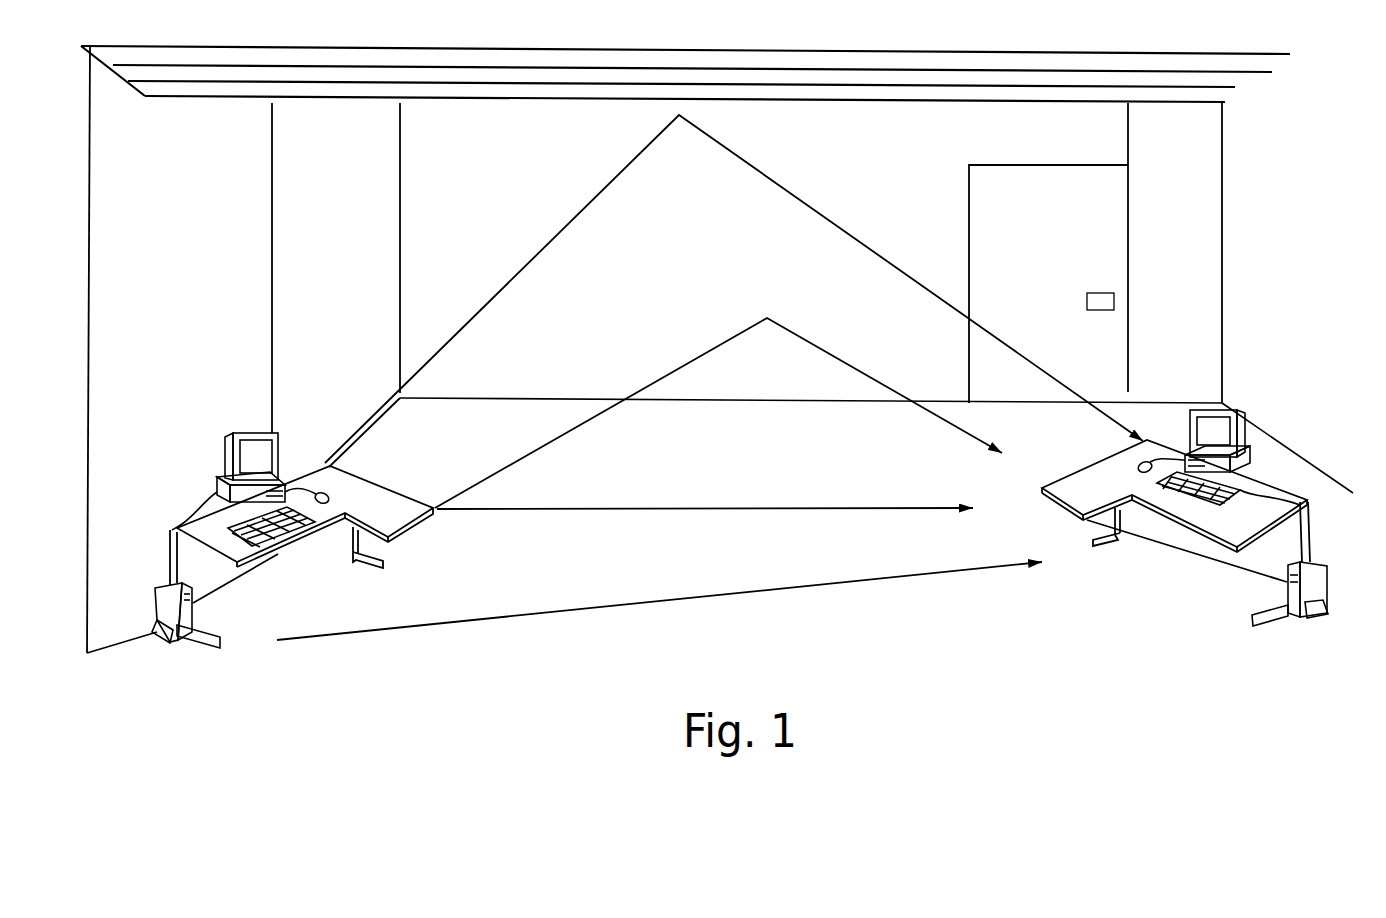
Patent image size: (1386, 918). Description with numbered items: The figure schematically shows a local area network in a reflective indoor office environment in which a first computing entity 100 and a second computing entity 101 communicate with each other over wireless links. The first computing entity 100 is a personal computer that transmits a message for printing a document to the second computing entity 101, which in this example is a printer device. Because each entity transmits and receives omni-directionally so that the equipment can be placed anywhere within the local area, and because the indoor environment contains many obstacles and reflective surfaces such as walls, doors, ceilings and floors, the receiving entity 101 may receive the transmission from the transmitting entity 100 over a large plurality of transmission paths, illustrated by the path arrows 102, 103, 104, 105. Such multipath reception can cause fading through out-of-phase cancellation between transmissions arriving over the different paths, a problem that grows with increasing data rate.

The first computing entity 100 is at (238, 433).
The second computing entity 101 is at (1225, 411).
The path arrow 102 is at (782, 590).
The path arrow 103 is at (782, 509).
The path arrow 104 is at (660, 378).
The path arrow 105 is at (617, 178).